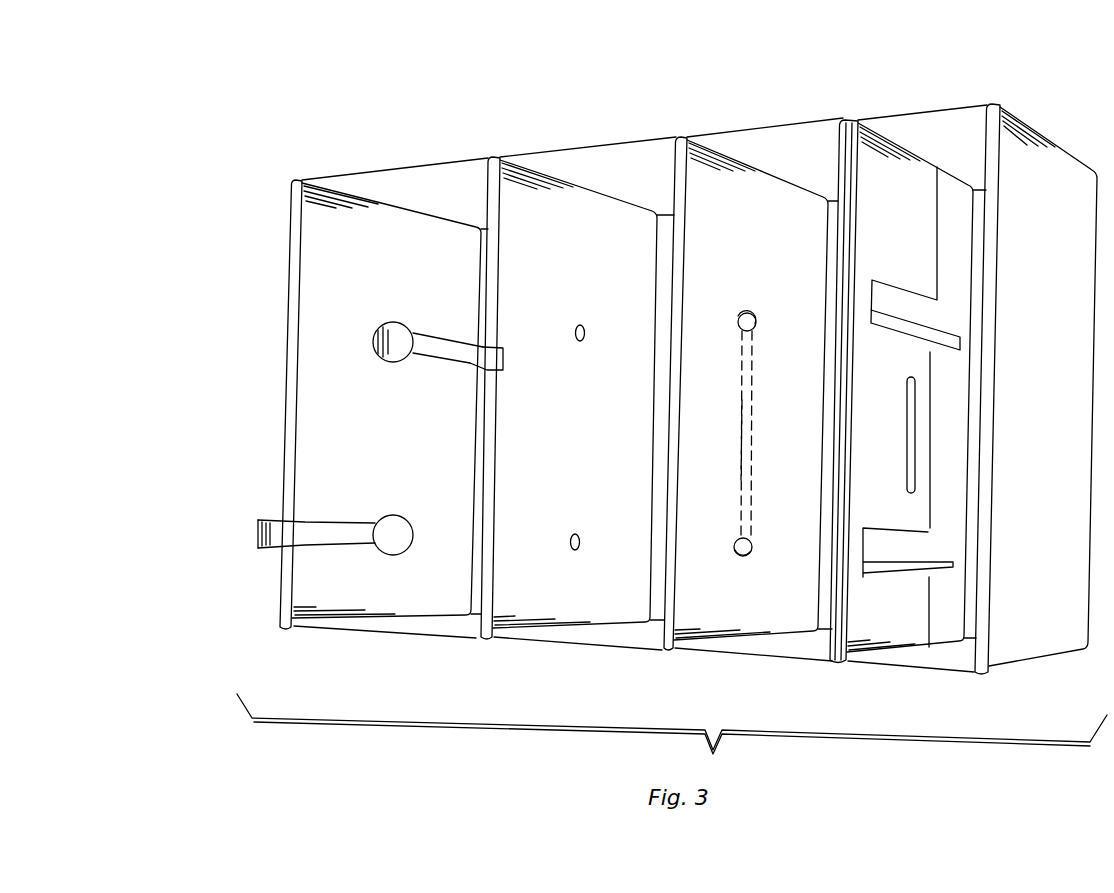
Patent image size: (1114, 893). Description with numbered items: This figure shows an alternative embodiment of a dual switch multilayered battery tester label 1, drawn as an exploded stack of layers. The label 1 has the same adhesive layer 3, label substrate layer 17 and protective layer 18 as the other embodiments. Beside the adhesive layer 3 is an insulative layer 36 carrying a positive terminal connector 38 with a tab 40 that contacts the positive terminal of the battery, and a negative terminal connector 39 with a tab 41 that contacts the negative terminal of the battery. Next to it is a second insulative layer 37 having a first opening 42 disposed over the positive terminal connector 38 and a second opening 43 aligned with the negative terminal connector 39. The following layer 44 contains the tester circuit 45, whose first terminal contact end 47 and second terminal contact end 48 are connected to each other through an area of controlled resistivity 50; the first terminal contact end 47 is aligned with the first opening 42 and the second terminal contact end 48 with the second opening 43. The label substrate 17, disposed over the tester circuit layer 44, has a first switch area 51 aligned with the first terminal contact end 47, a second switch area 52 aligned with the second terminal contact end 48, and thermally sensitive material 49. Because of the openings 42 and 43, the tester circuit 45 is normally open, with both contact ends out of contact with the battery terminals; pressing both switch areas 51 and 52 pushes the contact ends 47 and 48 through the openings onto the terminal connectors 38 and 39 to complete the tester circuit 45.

The label 1 is at (226, 242).
The adhesive layer 3 is at (287, 347).
The label substrate layer 17 is at (860, 120).
The protective layer 18 is at (1015, 123).
The insulative layer 36 is at (320, 193).
The second insulative layer 37 is at (517, 170).
The positive terminal connector 38 is at (428, 365).
The negative terminal connector 39 is at (308, 520).
The tab 40 is at (480, 345).
The tab 41 is at (257, 533).
The first opening 42 is at (585, 327).
The second opening 43 is at (580, 553).
The tester circuit layer 44 is at (682, 660).
The tester circuit 45 is at (757, 407).
The first terminal contact end 47 is at (737, 337).
The second terminal contact end 48 is at (738, 567).
The thermally sensitive material 49 is at (908, 450).
The area of controlled resistivity 50 is at (738, 445).
The first switch area 51 is at (890, 310).
The second switch area 52 is at (888, 562).